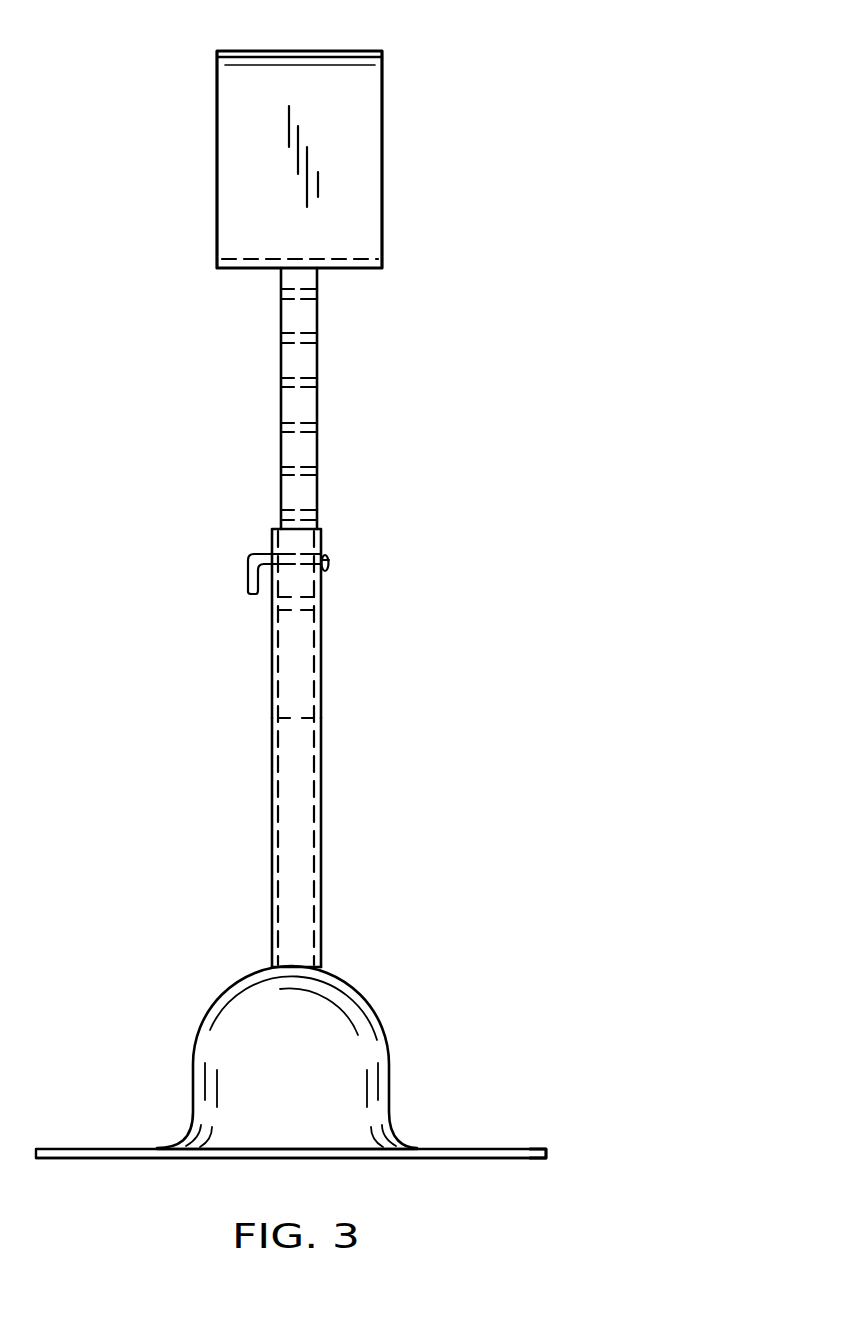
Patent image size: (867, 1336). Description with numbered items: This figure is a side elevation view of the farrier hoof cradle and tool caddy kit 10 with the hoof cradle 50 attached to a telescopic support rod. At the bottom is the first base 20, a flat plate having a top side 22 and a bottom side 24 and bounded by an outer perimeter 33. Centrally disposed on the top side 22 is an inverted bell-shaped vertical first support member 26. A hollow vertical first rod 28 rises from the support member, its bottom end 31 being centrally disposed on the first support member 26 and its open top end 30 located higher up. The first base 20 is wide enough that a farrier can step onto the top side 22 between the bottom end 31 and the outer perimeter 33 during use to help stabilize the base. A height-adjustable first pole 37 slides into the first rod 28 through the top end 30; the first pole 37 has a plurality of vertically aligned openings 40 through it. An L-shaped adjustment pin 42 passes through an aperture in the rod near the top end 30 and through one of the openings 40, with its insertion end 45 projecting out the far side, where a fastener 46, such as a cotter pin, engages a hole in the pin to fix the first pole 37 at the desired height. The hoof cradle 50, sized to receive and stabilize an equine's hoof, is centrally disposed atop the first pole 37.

The farrier hoof cradle and tool caddy kit 10 is at (501, 116).
The hoof cradle 50 is at (383, 52).
The first pole 37 is at (316, 357).
The openings 40 is at (291, 428).
The top end 30 is at (315, 527).
The insertion end 45 is at (329, 557).
The fastener 46 is at (329, 568).
The adjustment pin 42 is at (250, 593).
The first rod 28 is at (321, 750).
The bottom end 31 is at (317, 966).
The first support member 26 is at (368, 1005).
The top side 22 is at (490, 1149).
The first base 20 is at (546, 1150).
The outer perimeter 33 is at (548, 1157).
The bottom side 24 is at (523, 1160).